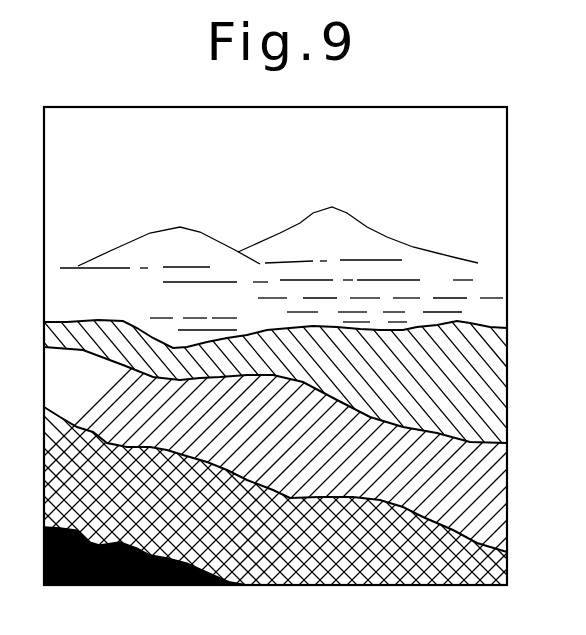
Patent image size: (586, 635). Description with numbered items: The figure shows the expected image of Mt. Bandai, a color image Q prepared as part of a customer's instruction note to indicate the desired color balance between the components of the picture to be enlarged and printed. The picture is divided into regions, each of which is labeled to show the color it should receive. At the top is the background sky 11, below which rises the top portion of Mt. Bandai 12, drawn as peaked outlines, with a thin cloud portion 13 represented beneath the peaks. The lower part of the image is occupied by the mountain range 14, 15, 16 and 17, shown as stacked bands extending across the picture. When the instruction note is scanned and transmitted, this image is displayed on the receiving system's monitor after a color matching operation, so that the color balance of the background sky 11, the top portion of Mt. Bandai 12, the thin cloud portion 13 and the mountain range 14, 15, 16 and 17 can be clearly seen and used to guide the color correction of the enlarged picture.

The background sky 11 is at (231, 214).
The top portion of Mt. Bandai 12 is at (383, 245).
The thin cloud portion 13 is at (306, 304).
The mountain range 14 is at (293, 350).
The mountain range 15 is at (293, 350).
The mountain range 16 is at (293, 350).
The mountain range 17 is at (145, 556).